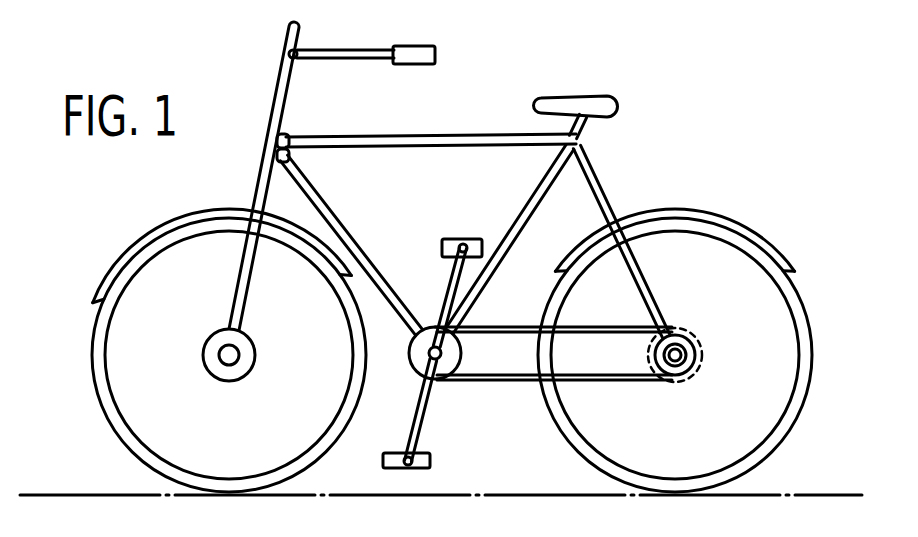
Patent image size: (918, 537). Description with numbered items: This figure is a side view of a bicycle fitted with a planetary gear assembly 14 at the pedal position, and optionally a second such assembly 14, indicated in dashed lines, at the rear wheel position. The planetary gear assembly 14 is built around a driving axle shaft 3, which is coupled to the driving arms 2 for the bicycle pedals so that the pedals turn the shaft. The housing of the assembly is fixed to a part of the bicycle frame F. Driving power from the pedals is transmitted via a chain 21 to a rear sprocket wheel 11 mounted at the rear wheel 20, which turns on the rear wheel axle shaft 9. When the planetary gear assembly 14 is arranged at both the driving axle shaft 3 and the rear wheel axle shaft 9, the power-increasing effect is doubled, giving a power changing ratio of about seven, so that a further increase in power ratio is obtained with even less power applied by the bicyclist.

The bicycle frame F is at (595, 153).
The driving arms 2 is at (421, 418).
The driving axle shaft 3 is at (463, 379).
The rear wheel axle shaft 9 is at (692, 358).
The rear sprocket wheel 11 is at (686, 374).
The planetary gear assembly 14 is at (412, 372).
The rear wheel 20 is at (740, 345).
The chain 21 is at (485, 326).